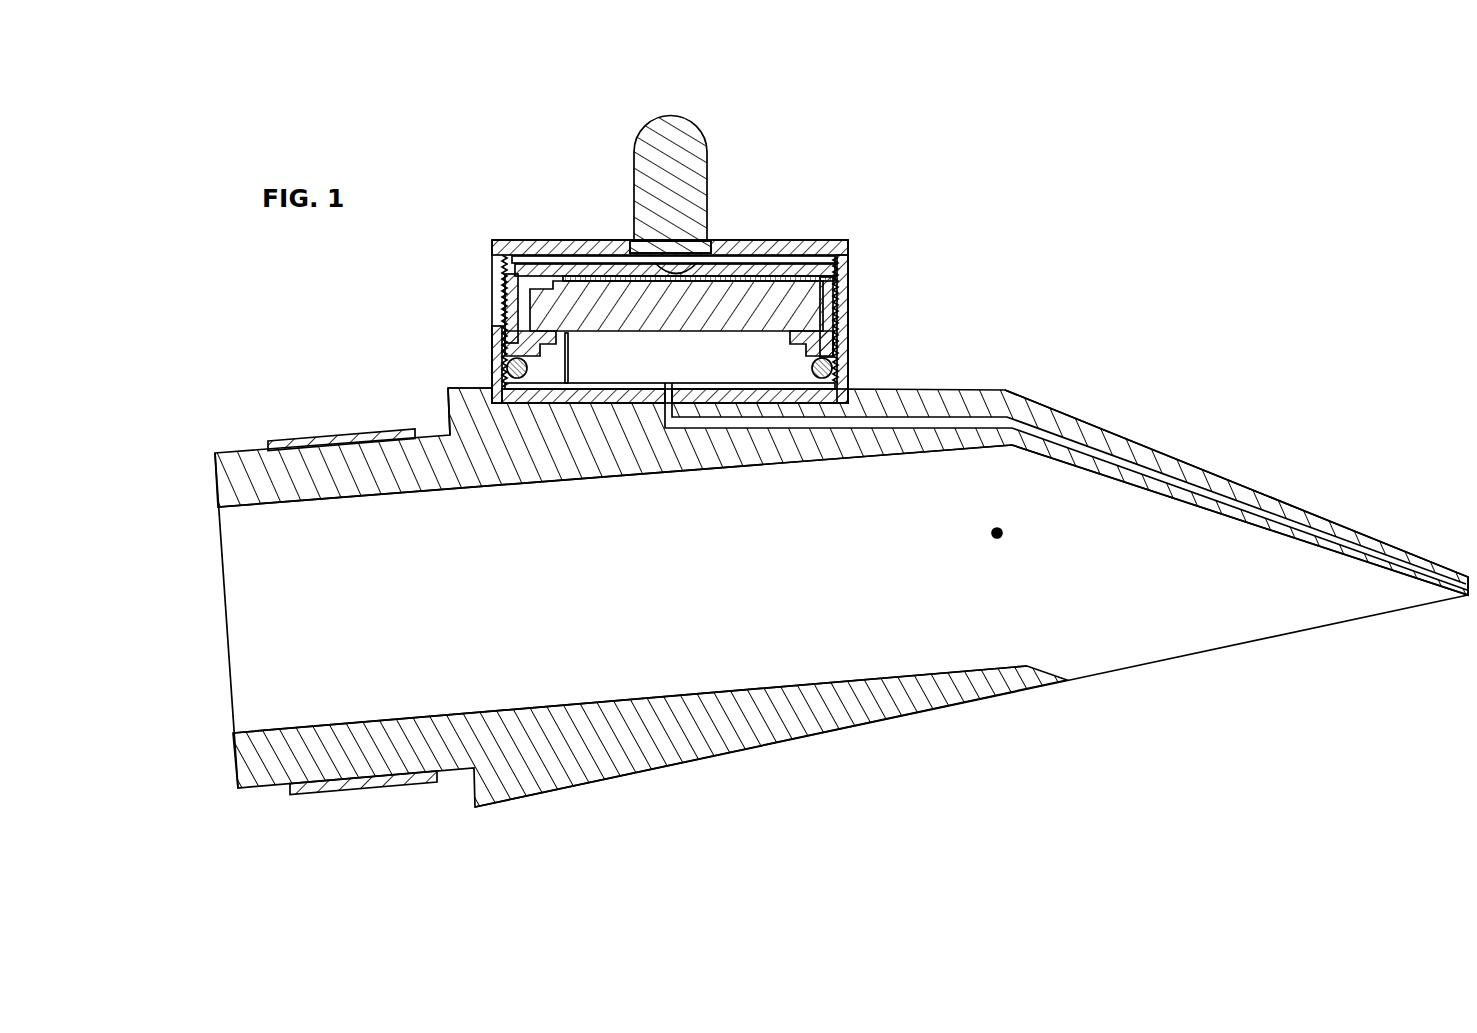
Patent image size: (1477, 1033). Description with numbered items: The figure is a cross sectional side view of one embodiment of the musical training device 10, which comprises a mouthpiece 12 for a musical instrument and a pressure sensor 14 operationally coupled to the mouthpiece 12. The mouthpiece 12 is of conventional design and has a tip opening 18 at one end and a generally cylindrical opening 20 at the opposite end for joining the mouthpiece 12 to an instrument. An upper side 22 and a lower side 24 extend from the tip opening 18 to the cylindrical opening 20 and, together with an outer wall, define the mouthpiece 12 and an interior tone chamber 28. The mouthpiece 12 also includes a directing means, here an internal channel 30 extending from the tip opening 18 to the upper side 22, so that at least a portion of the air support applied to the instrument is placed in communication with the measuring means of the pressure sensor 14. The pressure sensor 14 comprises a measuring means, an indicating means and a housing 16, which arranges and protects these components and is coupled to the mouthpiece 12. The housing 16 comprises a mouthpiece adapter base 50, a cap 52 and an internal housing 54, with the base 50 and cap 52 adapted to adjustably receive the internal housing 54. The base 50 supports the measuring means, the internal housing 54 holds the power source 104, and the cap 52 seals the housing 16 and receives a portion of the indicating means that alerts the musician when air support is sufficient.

The musical training device 10 is at (330, 368).
The mouthpiece 12 is at (212, 592).
The pressure sensor 14 is at (878, 99).
The housing 16 is at (492, 237).
The tip opening 18 is at (1268, 640).
The generally cylindrical opening 20 is at (227, 622).
The upper side 22 is at (454, 385).
The lower side 24 is at (883, 722).
The interior tone chamber 28 is at (997, 533).
The internal channel 30 is at (1222, 493).
The mouthpiece adapter base 50 is at (850, 355).
The cap 52 is at (752, 240).
The internal housing 54 is at (840, 290).
The power source 104 is at (629, 333).